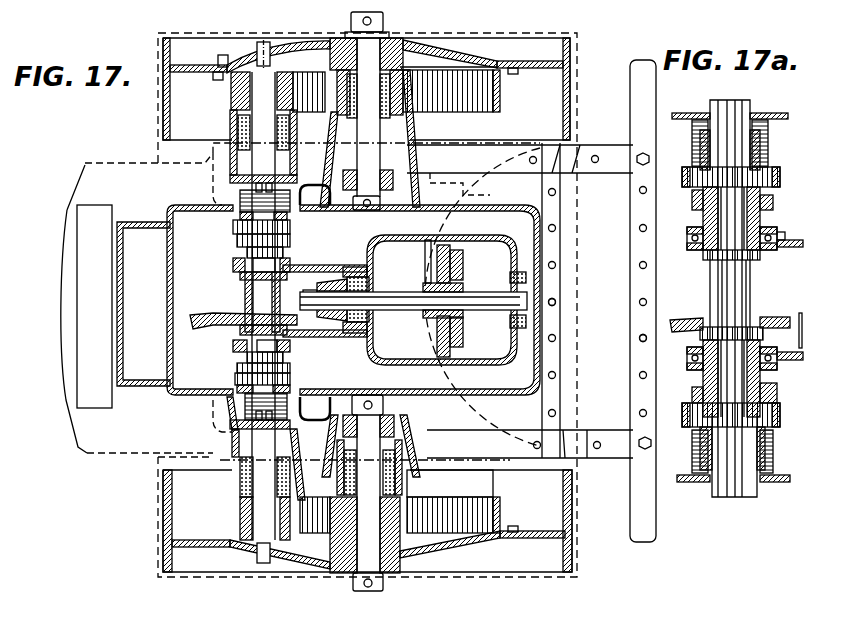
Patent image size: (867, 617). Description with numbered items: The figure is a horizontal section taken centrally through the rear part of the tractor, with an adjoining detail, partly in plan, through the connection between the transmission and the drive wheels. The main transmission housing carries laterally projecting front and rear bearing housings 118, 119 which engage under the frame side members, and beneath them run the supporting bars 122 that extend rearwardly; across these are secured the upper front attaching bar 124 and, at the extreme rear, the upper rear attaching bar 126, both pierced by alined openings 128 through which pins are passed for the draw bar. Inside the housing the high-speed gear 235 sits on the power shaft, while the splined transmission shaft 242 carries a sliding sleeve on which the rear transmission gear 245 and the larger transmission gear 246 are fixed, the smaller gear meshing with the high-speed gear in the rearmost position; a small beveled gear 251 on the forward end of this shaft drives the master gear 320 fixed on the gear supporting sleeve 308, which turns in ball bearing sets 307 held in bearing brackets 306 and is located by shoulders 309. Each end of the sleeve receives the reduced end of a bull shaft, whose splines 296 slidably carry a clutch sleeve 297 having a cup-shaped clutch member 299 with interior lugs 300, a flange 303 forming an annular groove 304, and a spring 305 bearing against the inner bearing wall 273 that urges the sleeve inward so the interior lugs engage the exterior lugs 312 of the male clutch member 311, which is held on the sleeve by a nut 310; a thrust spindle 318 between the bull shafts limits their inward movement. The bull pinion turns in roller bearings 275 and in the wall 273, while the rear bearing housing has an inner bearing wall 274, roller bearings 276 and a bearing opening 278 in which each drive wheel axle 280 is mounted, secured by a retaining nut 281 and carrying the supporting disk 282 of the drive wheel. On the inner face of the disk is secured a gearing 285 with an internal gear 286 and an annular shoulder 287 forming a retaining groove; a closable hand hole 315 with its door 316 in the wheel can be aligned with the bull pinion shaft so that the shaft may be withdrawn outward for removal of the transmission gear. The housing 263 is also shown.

In FIG. 17, the front bearing housing 118 is at (237, 478).
In FIG. 17, the rear bearing housing 119 is at (400, 500).
In FIG. 17, the supporting bars 122 is at (572, 440).
In FIG. 17, the upper front attaching bar 124 is at (557, 248).
In FIG. 17, the upper rear attaching bar 126 is at (637, 97).
In FIG. 17, the alined openings 128 is at (640, 338).
In FIG. 17A, the high-speed gear 235 is at (703, 380).
In FIG. 17, the splined transmission shaft 242 is at (383, 313).
In FIG. 17, the rear transmission gear 245 is at (463, 343).
In FIG. 17, the larger transmission gear 246 is at (437, 351).
In FIG. 17, the beveled gear 251 is at (340, 275).
In FIG. 17, the housing 263 is at (167, 530).
In FIG. 17, the inner bearing wall 273 is at (233, 443).
In FIG. 17A, the inner bearing wall 273 is at (772, 483).
In FIG. 17, the inner bearing wall 274 is at (415, 433).
In FIG. 17, the roller bearings 275 is at (237, 490).
In FIG. 17, the roller bearings 276 is at (398, 535).
In FIG. 17, the bearing opening 278 is at (397, 407).
In FIG. 17, the drive wheel axle 280 is at (378, 527).
In FIG. 17, the retaining nut 281 is at (357, 402).
In FIG. 17, the supporting disk 282 is at (328, 560).
In FIG. 17, the gearing 285 is at (503, 518).
In FIG. 17, the internal gear 286 is at (482, 497).
In FIG. 17, the annular shoulder 287 is at (497, 547).
In FIG. 17A, the splines 296 is at (722, 490).
In FIG. 17A, the clutch sleeve 297 is at (768, 453).
In FIG. 17A, the cup-shaped clutch member 299 is at (782, 417).
In FIG. 17A, the interior lugs 300 is at (763, 170).
In FIG. 17A, the flange 303 is at (765, 432).
In FIG. 17A, the annular groove 304 is at (700, 440).
In FIG. 17A, the spring 305 is at (768, 130).
In FIG. 17, the bearing brackets 306 is at (330, 265).
In FIG. 17A, the bearing brackets 306 is at (790, 247).
In FIG. 17, the ball bearing sets 307 is at (233, 265).
In FIG. 17A, the ball bearing sets 307 is at (700, 262).
In FIG. 17A, the gear supporting sleeve 308 is at (750, 300).
In FIG. 17A, the shoulders 309 is at (728, 286).
In FIG. 17A, the nut 310 is at (702, 188).
In FIG. 17A, the male clutch member 311 is at (768, 206).
In FIG. 17, the exterior lugs 312 is at (235, 240).
In FIG. 17A, the exterior lugs 312 is at (700, 228).
In FIG. 17, the hand hole 315 is at (293, 50).
In FIG. 17, the door 316 is at (250, 50).
In FIG. 17, the thrust spindle 318 is at (248, 300).
In FIG. 17, the master gear 320 is at (208, 329).
In FIG. 17A, the master gear 320 is at (687, 320).